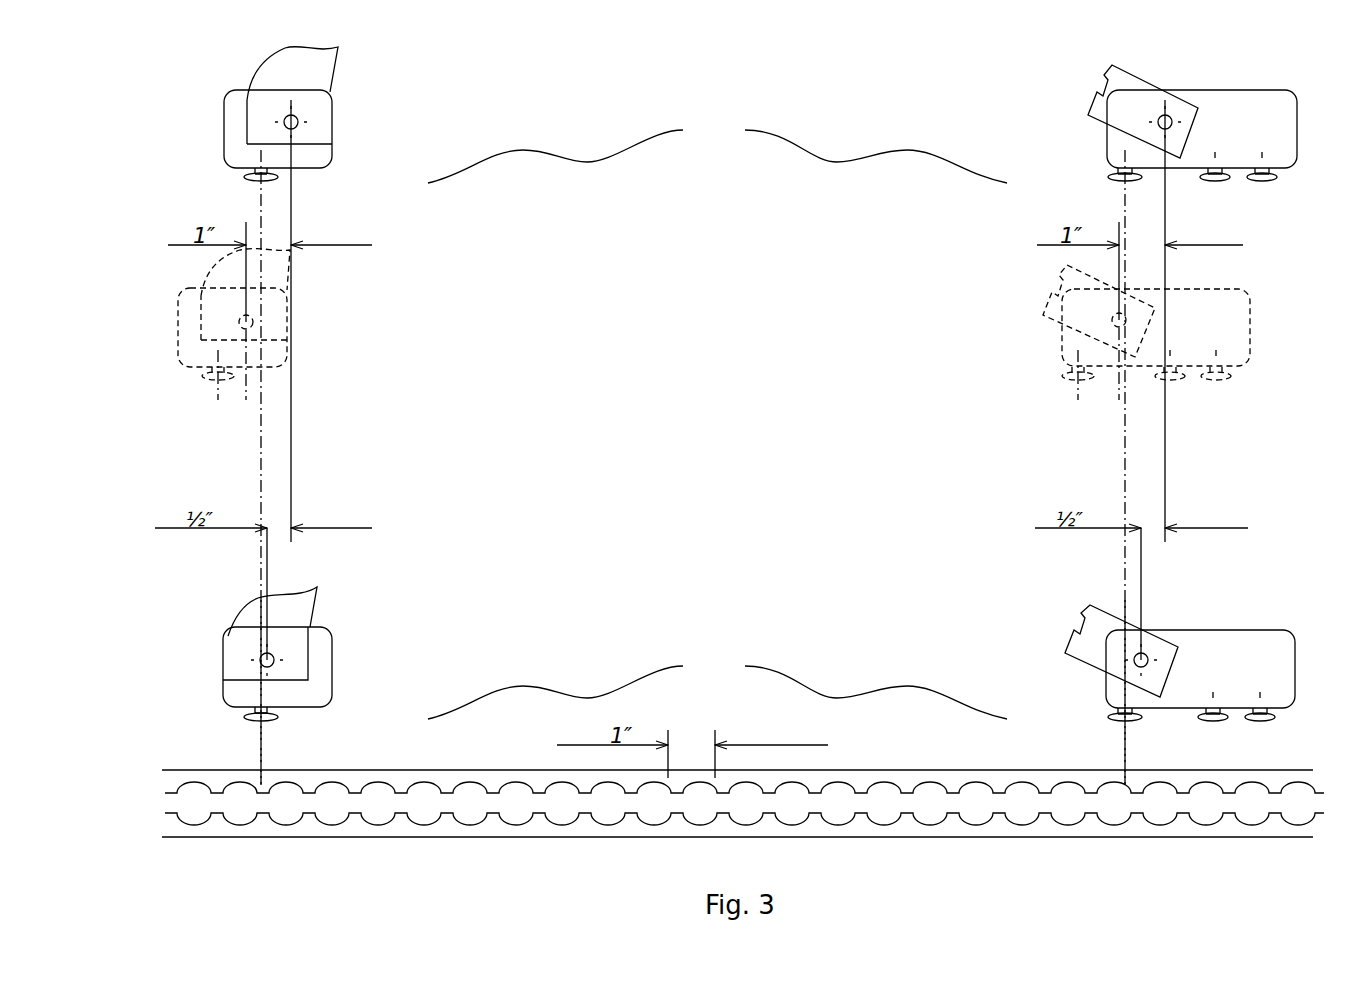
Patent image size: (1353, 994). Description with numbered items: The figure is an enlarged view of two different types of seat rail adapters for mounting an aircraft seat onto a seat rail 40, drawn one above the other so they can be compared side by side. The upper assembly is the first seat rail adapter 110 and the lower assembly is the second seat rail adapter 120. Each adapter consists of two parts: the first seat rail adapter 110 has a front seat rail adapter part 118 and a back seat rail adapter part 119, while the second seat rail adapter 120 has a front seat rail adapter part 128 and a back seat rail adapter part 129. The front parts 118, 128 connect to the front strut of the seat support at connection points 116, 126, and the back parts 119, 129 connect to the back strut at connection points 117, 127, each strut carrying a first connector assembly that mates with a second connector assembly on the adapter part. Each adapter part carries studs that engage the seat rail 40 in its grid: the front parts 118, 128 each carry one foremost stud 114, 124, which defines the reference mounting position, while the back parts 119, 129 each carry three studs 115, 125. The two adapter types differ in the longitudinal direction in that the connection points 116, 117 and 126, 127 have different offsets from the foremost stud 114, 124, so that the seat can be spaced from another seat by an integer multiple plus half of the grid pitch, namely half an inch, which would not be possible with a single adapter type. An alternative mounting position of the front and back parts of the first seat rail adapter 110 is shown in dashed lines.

The seat rail 40 is at (1197, 838).
The first seat rail adapter 110 is at (717, 148).
The second seat rail adapter 120 is at (717, 685).
The stud 114 is at (326, 416).
The studs 115 is at (1155, 407).
The connection point 116 is at (298, 120).
The connection point 117 is at (1170, 118).
The front seat rail adapter part 118 is at (332, 158).
The back seat rail adapter part 119 is at (1107, 160).
The stud 124 is at (326, 656).
The studs 125 is at (1154, 656).
The connection point 126 is at (274, 658).
The connection point 127 is at (1147, 656).
The front seat rail adapter part 128 is at (332, 700).
The back seat rail adapter part 129 is at (1106, 700).